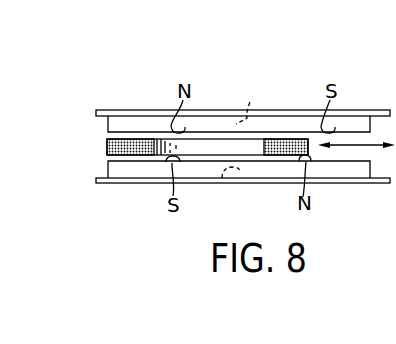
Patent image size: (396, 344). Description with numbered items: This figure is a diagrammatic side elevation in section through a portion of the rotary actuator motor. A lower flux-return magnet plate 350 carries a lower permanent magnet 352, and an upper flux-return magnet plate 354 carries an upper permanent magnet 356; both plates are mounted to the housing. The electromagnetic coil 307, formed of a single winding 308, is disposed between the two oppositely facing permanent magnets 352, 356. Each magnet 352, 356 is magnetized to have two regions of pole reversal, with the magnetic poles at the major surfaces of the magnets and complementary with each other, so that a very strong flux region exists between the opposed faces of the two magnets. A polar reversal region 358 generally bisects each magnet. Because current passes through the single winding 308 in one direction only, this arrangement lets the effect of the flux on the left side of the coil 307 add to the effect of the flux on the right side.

The lower flux-return magnet plate 350 is at (338, 183).
The lower permanent magnet 352 is at (133, 172).
The upper flux-return magnet plate 354 is at (352, 108).
The upper permanent magnet 356 is at (133, 122).
The electromagnetic coil 307 is at (199, 142).
The single winding 308 is at (107, 146).
The polar reversal region 358 is at (250, 102).